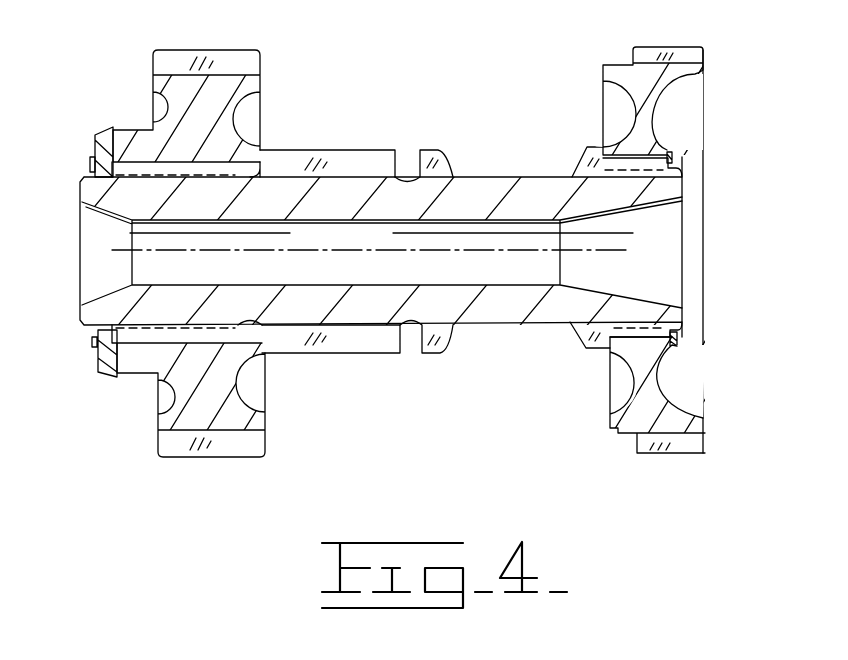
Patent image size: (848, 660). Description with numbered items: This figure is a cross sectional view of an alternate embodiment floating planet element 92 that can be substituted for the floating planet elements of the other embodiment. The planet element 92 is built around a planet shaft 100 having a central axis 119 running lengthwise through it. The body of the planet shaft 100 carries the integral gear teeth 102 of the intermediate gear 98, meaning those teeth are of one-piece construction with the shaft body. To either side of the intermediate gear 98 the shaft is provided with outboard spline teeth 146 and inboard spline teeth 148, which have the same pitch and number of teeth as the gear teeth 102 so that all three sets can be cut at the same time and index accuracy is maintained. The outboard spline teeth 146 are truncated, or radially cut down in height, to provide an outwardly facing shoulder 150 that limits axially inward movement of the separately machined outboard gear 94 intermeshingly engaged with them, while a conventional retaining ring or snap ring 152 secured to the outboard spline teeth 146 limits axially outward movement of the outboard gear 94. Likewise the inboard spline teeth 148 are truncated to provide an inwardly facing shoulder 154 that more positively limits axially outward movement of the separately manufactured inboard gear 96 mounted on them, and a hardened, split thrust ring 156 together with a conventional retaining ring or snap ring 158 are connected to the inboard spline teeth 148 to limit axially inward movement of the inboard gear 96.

The floating planet element 92 is at (390, 122).
The outboard gear 94 is at (600, 424).
The inboard gear 96 is at (266, 66).
The intermediate gear 98 is at (341, 356).
The planet shaft 100 is at (483, 305).
The integral gear teeth 102 is at (378, 160).
The central axis 119 is at (392, 245).
The outboard spline teeth 146 is at (680, 333).
The inboard spline teeth 148 is at (88, 331).
The outwardly facing shoulder 150 is at (626, 149).
The retaining ring or snap ring 152 is at (674, 157).
The inwardly facing shoulder 154 is at (262, 150).
The split thrust ring 156 is at (91, 158).
The retaining ring or snap ring 158 is at (100, 138).